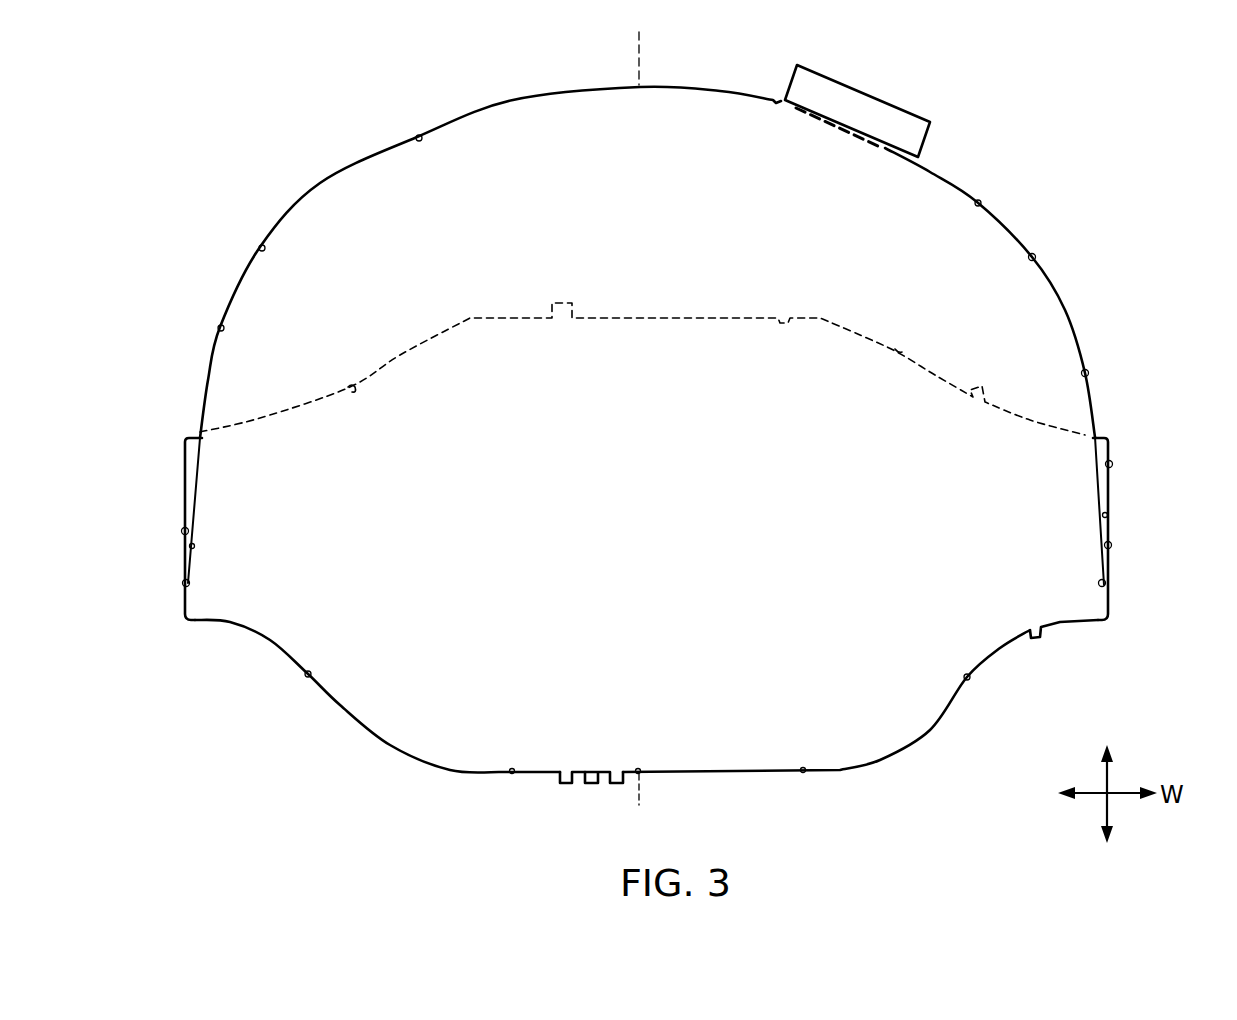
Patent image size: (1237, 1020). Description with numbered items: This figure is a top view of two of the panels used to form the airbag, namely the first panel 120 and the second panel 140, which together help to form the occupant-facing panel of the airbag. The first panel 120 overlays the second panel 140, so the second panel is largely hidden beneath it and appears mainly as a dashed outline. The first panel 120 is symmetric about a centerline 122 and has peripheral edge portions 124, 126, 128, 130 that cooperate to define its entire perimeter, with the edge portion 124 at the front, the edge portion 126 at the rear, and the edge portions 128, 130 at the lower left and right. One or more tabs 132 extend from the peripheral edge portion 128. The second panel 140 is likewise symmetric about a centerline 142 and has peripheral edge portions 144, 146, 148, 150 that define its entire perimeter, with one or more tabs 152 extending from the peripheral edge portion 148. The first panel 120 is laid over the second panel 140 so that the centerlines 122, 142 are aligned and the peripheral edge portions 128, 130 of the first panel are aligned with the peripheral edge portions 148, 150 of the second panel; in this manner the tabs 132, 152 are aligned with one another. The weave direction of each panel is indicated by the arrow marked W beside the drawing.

The first panel 120 is at (972, 170).
The centerline 122 is at (785, 104).
The centerline 142 is at (641, 60).
The peripheral edge portion 124 is at (522, 93).
The peripheral edge portion 126 is at (1002, 222).
The peripheral edge portion 128 is at (377, 698).
The peripheral edge portion 148 is at (368, 745).
The peripheral edge portion 130 is at (860, 706).
The peripheral edge portion 150 is at (885, 757).
The tab 132 is at (560, 786).
The tab 152 is at (592, 786).
The second panel 140 is at (1120, 448).
The peripheral edge portion 144 is at (190, 437).
The peripheral edge portion 146 is at (1100, 435).